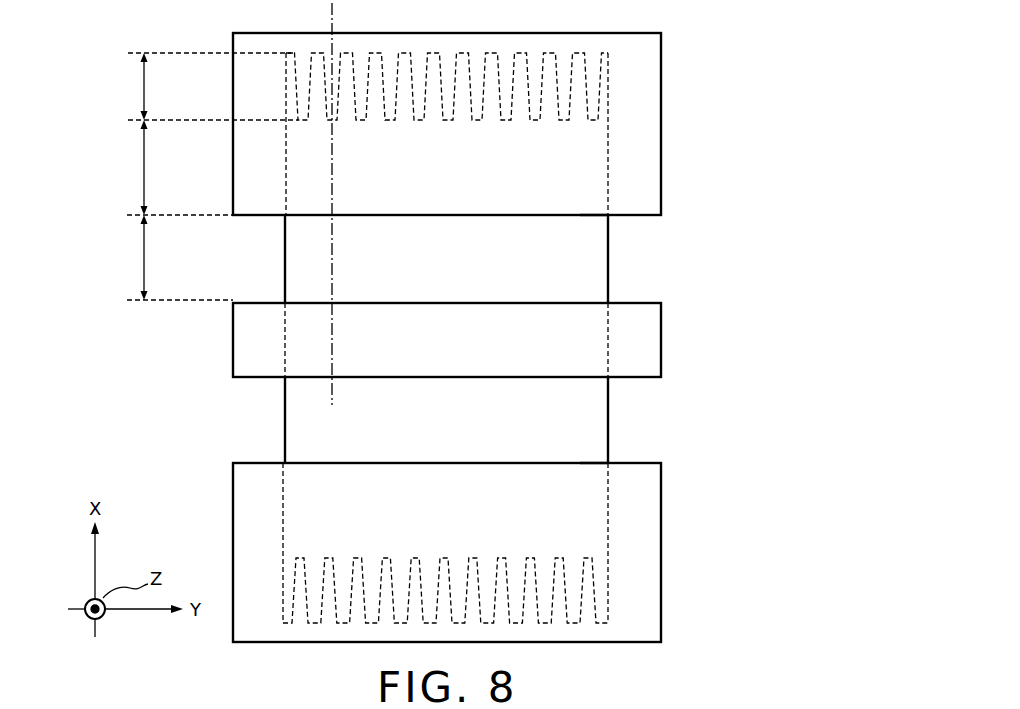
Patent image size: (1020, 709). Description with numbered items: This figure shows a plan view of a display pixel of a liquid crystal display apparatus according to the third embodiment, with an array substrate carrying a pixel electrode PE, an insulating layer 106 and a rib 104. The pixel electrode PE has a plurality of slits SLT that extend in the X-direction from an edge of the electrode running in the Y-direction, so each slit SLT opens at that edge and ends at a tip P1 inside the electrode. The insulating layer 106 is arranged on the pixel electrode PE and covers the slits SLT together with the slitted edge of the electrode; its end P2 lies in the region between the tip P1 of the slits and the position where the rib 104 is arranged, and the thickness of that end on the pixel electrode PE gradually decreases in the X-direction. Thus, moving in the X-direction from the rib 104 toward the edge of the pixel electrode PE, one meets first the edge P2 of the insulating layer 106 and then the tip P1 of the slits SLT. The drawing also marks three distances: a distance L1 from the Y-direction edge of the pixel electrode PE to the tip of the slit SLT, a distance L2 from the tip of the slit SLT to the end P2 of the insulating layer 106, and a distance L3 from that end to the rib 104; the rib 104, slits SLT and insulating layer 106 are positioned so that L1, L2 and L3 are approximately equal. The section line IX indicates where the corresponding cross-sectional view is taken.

The insulating layer 106 is at (648, 172).
The rib 104 is at (648, 347).
The pixel electrode PE is at (608, 270).
The tip of the slit P1 is at (597, 119).
The end of the insulating layer P2 is at (584, 215).
The slit SLT is at (303, 85).
The distance L1 is at (213, 86).
The distance L2 is at (180, 167).
The distance L3 is at (180, 257).
The section line IX is at (324, 16).